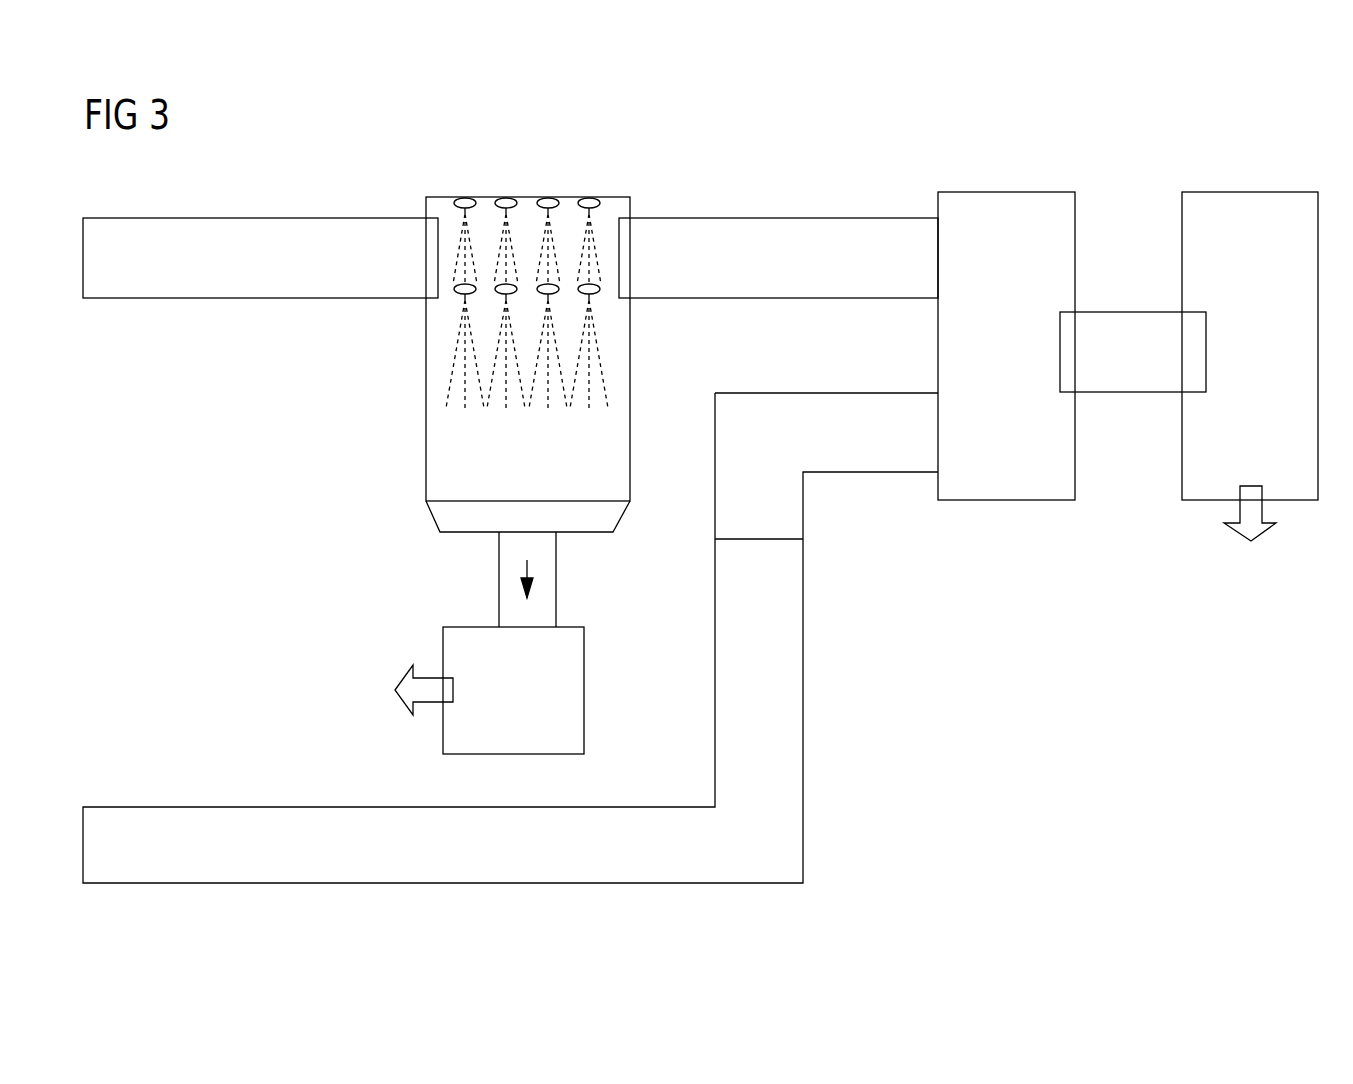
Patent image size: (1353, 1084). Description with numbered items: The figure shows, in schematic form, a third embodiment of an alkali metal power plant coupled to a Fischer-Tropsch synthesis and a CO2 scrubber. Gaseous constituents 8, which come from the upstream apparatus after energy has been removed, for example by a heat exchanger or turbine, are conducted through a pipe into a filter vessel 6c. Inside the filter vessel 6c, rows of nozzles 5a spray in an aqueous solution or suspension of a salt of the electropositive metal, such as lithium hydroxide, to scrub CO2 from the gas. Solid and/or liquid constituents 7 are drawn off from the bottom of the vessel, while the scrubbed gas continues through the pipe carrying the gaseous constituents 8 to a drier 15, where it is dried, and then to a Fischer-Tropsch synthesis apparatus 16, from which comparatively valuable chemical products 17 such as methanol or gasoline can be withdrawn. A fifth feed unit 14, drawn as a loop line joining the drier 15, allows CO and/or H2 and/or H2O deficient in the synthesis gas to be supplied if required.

The nozzles 5a is at (586, 197).
The filter vessel 6c is at (434, 444).
The solid and/or liquid constituents 7 is at (479, 690).
The gaseous constituents 8 is at (262, 234).
The fifth feed unit 14 is at (255, 818).
The drier 15 is at (1007, 206).
The Fischer-Tropsch synthesis apparatus 16 is at (1254, 206).
The chemical products 17 is at (1250, 534).